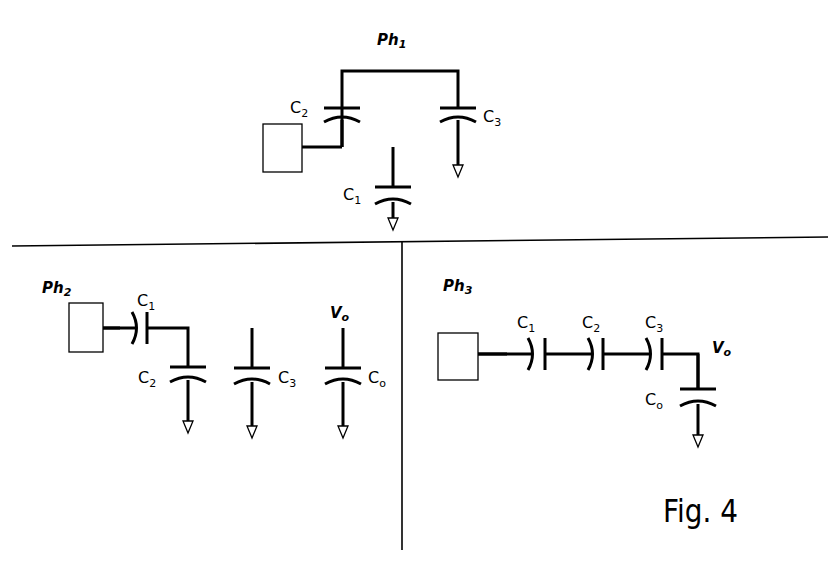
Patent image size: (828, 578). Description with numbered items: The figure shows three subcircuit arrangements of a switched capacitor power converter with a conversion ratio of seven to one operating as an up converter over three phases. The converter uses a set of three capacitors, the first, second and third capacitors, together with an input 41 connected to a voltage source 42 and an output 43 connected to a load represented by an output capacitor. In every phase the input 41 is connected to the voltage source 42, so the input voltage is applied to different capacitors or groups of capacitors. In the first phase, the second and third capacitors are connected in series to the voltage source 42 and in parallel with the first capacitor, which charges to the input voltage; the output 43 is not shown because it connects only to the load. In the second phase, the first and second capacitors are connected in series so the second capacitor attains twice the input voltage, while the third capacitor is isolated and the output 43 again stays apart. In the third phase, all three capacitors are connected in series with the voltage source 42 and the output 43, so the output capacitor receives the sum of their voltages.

The input 41 is at (315, 148).
The voltage source 42 is at (268, 173).
The output 43 is at (700, 375).